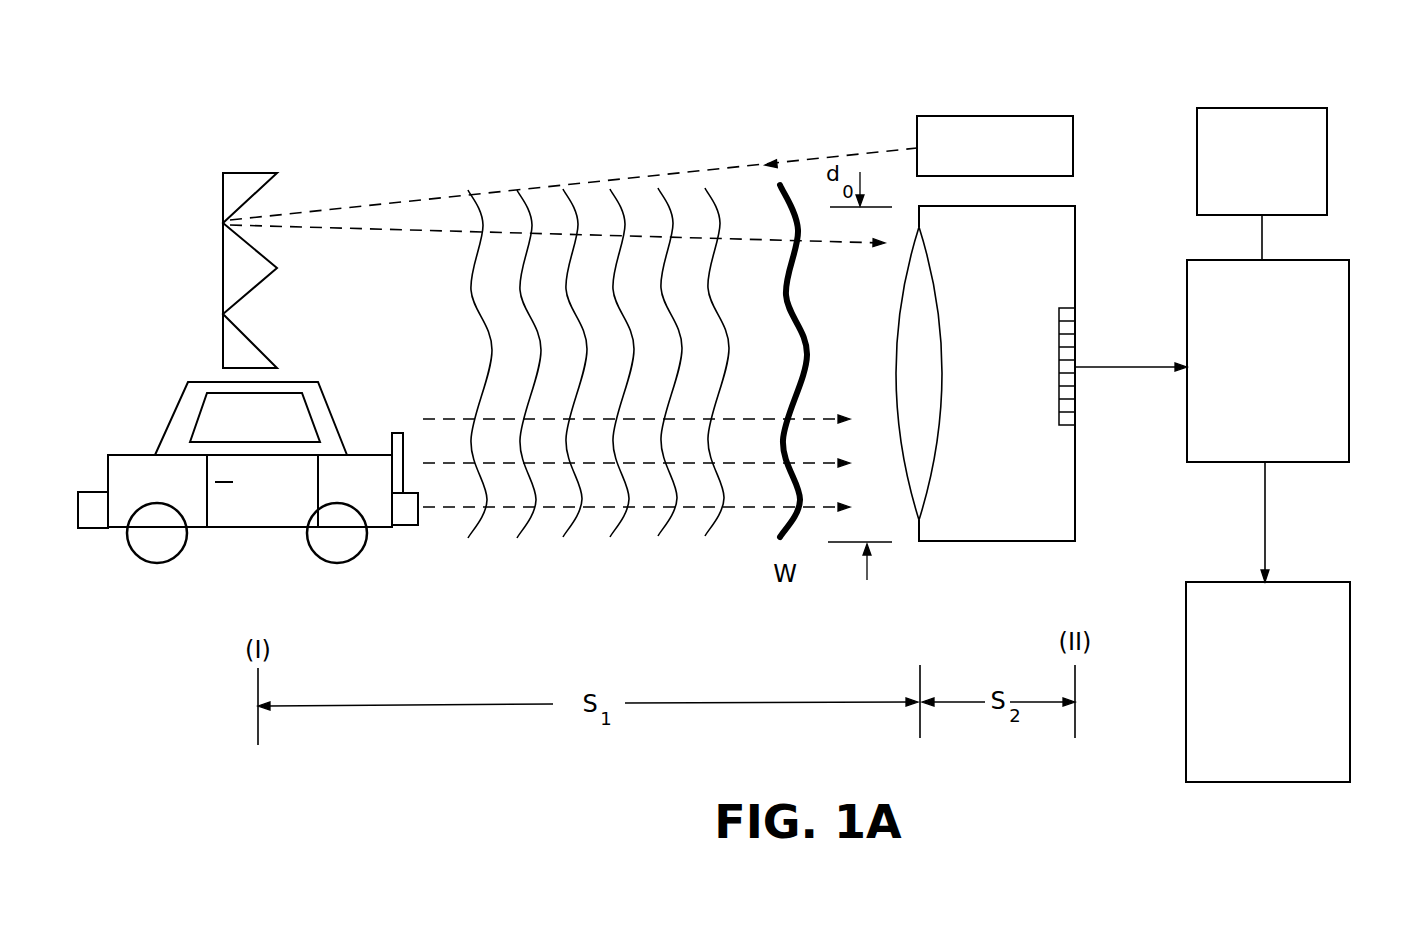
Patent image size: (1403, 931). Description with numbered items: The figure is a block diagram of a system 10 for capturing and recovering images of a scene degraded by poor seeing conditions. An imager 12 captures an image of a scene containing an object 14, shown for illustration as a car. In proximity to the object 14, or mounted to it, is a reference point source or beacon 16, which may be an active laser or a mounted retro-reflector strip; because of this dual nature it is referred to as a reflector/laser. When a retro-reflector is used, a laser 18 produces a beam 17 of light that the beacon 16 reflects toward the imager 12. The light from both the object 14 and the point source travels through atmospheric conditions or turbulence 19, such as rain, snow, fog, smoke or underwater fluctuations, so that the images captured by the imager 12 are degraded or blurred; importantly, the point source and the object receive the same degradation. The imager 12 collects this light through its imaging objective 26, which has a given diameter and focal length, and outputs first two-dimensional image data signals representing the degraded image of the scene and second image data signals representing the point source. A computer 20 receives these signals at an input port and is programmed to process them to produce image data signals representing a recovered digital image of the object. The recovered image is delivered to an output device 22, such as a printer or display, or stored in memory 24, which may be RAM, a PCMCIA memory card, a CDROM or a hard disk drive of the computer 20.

The system 10 is at (709, 49).
The imager 12 is at (1075, 231).
The object 14 is at (172, 414).
The reference point source or beacon (reflector/laser, R/L) 16 is at (223, 200).
The beam 17 is at (680, 171).
The laser 18 is at (1073, 145).
The atmospheric conditions (turbulence) 19 is at (641, 358).
The computer 20 is at (1349, 303).
The output device 22 is at (1350, 646).
The memory 24 is at (1327, 160).
The imaging objective 26 is at (944, 365).